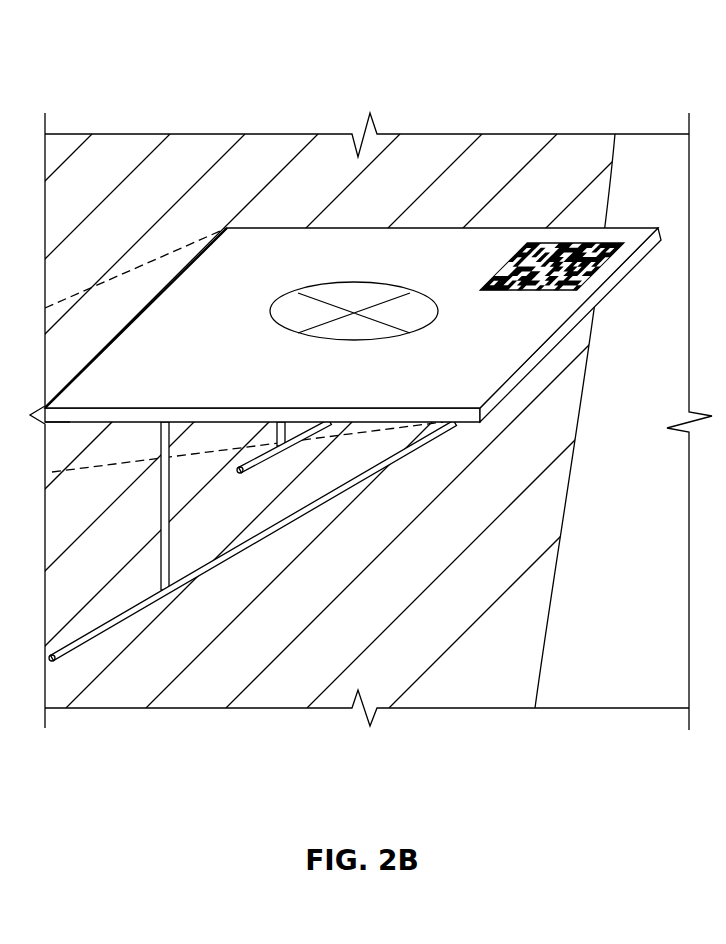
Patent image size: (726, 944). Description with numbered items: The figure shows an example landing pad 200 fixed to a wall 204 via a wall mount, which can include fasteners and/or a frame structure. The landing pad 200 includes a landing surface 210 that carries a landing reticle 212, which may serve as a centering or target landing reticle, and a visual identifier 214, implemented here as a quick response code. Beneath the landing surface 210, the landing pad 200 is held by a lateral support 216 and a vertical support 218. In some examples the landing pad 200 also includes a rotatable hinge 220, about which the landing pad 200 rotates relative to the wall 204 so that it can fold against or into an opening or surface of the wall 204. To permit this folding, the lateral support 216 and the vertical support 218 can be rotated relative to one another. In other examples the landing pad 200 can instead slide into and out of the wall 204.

The landing pad 200 is at (447, 196).
The wall 204 is at (90, 205).
The landing surface 210 is at (465, 373).
The landing reticle 212 is at (354, 282).
The visual identifier 214 is at (568, 243).
The lateral support 216 is at (243, 549).
The vertical support 218 is at (160, 500).
The rotatable hinge 220 is at (56, 424).